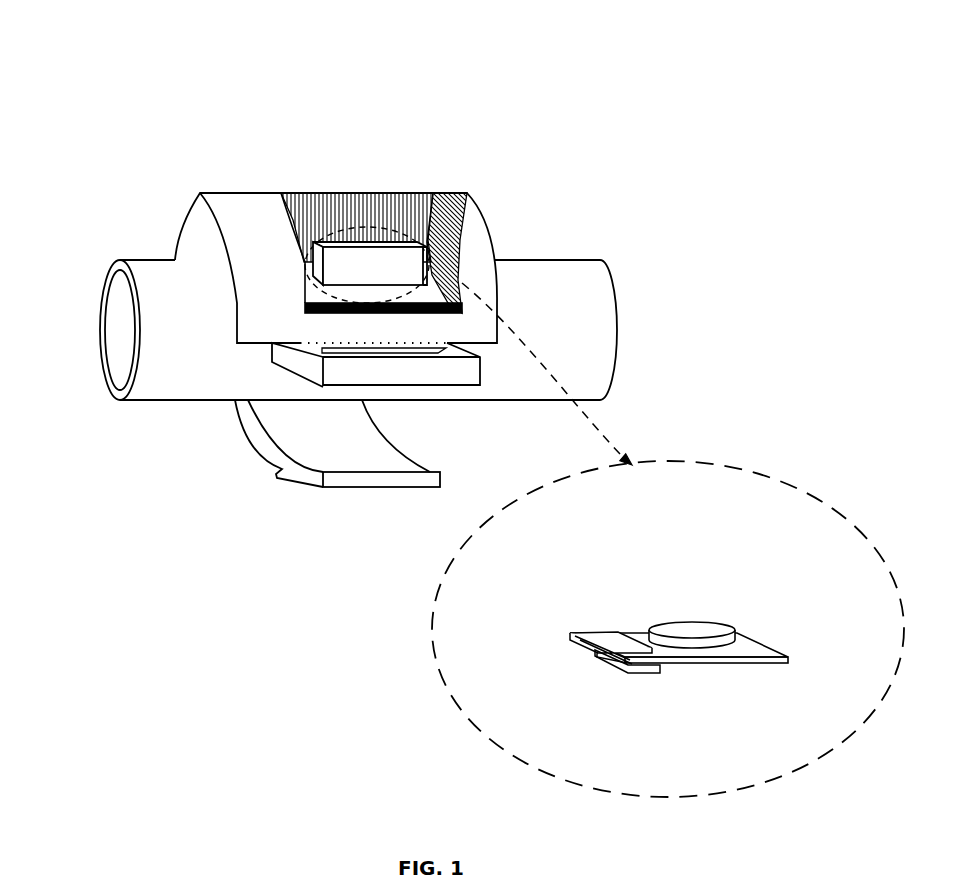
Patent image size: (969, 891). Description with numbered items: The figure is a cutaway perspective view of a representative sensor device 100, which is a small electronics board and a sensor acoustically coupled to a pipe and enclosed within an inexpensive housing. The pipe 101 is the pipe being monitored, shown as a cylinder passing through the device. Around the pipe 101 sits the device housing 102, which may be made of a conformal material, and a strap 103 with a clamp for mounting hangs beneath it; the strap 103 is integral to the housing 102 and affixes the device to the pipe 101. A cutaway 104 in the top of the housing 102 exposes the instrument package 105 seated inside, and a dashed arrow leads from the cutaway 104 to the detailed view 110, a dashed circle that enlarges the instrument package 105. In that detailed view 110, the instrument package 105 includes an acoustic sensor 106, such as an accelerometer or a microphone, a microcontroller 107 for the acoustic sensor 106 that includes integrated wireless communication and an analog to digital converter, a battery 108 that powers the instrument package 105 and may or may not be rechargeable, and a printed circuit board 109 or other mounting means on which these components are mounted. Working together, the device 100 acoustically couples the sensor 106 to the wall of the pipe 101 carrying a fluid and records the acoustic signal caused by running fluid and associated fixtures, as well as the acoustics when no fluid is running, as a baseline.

The sensor device 100 is at (500, 69).
The pipe 101 is at (158, 256).
The device housing 102 is at (453, 193).
The strap 103 is at (367, 488).
The cutaway 104 is at (333, 193).
The instrument package 105 is at (397, 243).
The acoustic sensor 106 is at (617, 665).
The microcontroller 107 is at (603, 632).
The battery 108 is at (682, 632).
The printed circuit board 109 is at (790, 657).
The detailed view 110 is at (780, 477).